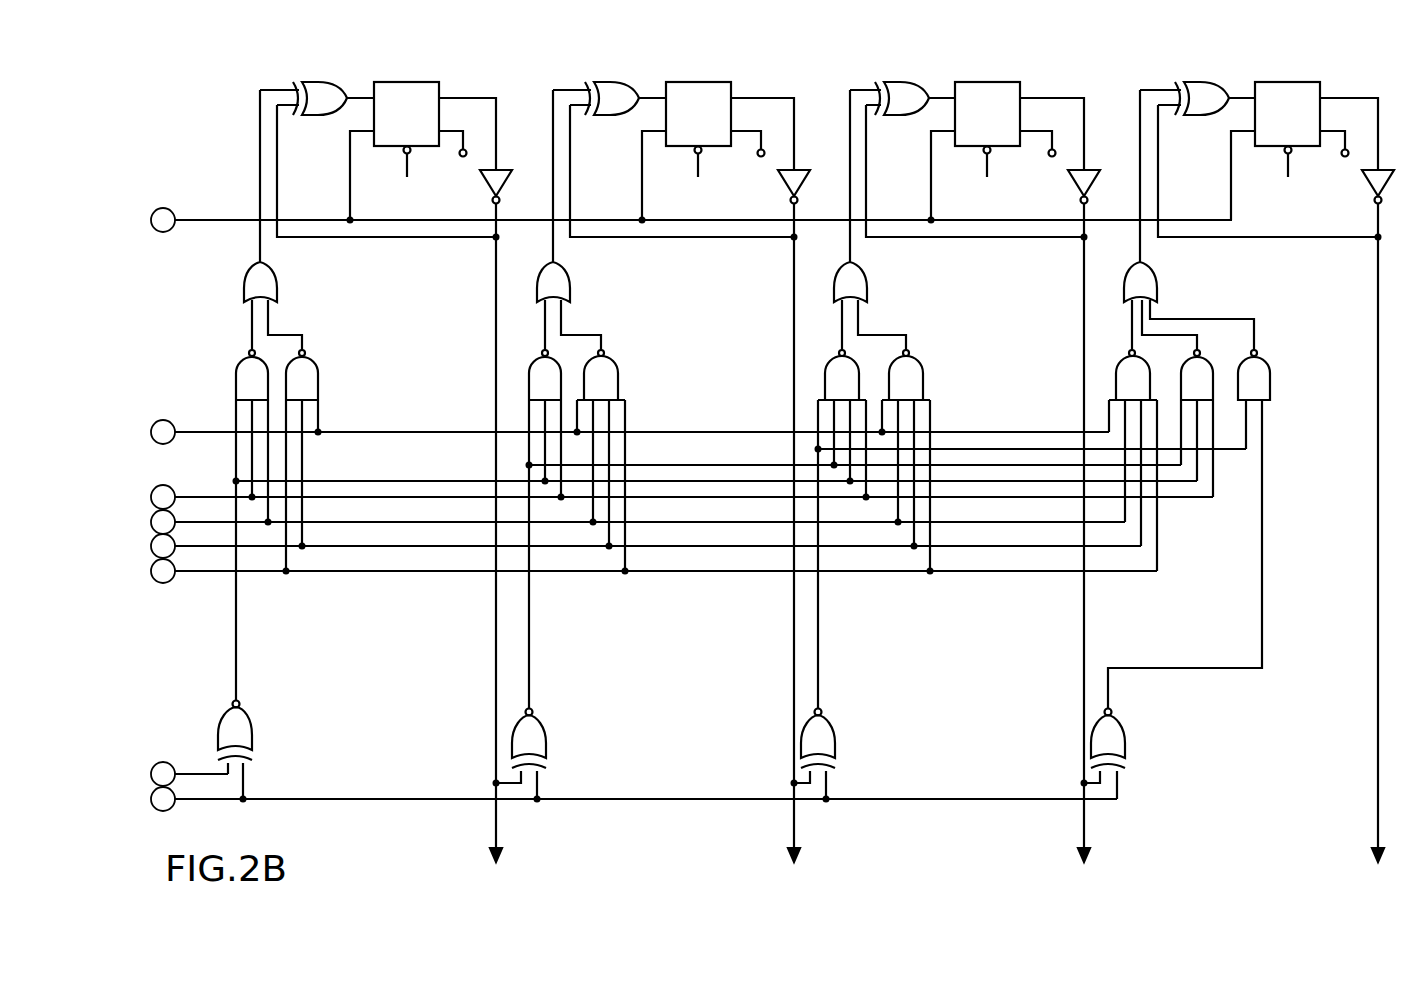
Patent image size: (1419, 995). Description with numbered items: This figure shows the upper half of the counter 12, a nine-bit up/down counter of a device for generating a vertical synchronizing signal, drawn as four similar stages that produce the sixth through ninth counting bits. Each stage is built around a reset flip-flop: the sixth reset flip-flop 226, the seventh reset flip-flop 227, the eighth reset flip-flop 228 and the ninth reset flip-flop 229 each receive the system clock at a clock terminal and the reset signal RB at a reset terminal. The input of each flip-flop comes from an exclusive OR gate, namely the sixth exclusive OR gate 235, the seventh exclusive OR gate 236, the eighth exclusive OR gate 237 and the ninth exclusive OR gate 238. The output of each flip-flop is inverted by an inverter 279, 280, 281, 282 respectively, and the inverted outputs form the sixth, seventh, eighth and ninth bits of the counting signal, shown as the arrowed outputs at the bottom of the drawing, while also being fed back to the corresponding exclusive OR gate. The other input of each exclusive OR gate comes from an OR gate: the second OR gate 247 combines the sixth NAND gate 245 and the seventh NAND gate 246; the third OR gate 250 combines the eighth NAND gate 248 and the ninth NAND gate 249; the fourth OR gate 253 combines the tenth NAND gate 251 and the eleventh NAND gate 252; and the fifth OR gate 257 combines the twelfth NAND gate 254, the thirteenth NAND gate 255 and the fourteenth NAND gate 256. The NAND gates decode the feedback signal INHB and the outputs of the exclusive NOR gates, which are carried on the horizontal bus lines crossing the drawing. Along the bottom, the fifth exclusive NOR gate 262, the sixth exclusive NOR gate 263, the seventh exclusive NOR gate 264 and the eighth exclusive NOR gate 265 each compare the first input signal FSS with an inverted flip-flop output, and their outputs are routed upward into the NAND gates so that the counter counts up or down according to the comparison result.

The counter 12 is at (210, 53).
The sixth exclusive OR gate 235 is at (320, 80).
The seventh exclusive OR gate 236 is at (613, 80).
The eighth exclusive OR gate 237 is at (898, 80).
The ninth exclusive OR gate 238 is at (1200, 80).
The sixth reset flip-flop 226 is at (406, 82).
The seventh reset flip-flop 227 is at (698, 82).
The eighth reset flip-flop 228 is at (988, 82).
The ninth reset flip-flop 229 is at (1289, 82).
The inverter 279 is at (487, 187).
The inverter 280 is at (783, 187).
The inverter 281 is at (1073, 187).
The inverter 282 is at (1367, 187).
The second OR gate 247 is at (278, 285).
The third OR gate 250 is at (571, 285).
The fourth OR gate 253 is at (868, 285).
The fifth OR gate 257 is at (1158, 285).
The sixth NAND gate 245 is at (236, 385).
The seventh NAND gate 246 is at (318, 385).
The eighth NAND gate 248 is at (529, 385).
The ninth NAND gate 249 is at (618, 385).
The tenth NAND gate 251 is at (825, 385).
The eleventh NAND gate 252 is at (923, 385).
The twelfth NAND gate 254 is at (1116, 385).
The thirteenth NAND gate 255 is at (1205, 385).
The fourteenth NAND gate 256 is at (1270, 385).
The fifth exclusive NOR gate 262 is at (252, 735).
The sixth exclusive NOR gate 263 is at (546, 742).
The seventh exclusive NOR gate 264 is at (835, 742).
The eighth exclusive NOR gate 265 is at (1125, 742).